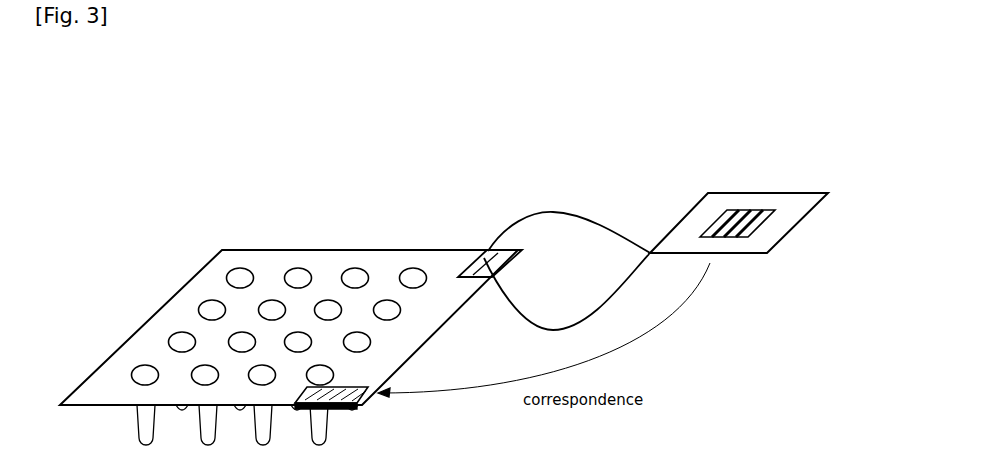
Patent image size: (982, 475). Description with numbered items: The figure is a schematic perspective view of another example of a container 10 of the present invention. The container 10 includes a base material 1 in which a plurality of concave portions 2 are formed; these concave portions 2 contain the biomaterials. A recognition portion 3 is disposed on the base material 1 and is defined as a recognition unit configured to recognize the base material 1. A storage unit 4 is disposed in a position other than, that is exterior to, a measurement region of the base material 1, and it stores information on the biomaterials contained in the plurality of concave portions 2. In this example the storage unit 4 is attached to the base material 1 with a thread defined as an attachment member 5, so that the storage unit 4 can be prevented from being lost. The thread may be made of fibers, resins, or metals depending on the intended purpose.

The container 10 is at (453, 135).
The base material 1 is at (392, 262).
The concave portions 2 is at (296, 267).
The recognition portion 3 is at (366, 397).
The storage unit 4 is at (740, 238).
The attachment member 5 is at (518, 311).